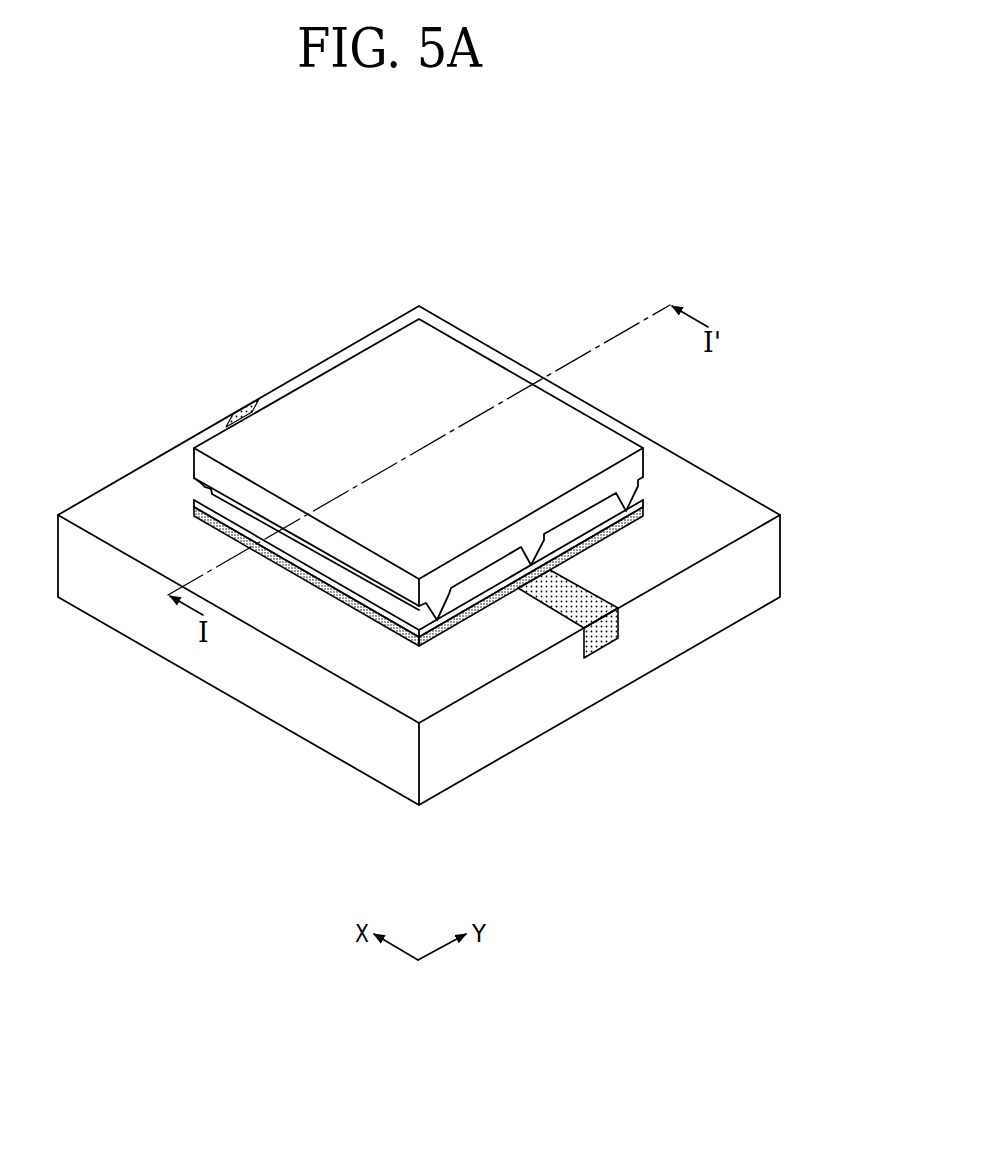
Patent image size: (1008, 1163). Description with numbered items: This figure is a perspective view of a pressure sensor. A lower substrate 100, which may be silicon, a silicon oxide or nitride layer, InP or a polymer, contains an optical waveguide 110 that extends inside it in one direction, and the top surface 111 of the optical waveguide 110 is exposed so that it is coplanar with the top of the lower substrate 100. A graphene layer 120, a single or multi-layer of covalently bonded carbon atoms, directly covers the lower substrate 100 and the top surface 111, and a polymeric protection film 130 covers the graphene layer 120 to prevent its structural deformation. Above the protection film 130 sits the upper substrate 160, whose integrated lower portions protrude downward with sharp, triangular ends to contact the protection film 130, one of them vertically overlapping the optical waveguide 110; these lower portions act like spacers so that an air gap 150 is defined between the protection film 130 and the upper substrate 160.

The lower substrate 100 is at (767, 563).
The optical waveguide 110 is at (602, 638).
The top surface of the optical waveguide 111 is at (617, 617).
The graphene layer 120 is at (644, 512).
The protection film 130 is at (644, 504).
The air gap 150 is at (458, 596).
The upper substrate 160 is at (448, 362).